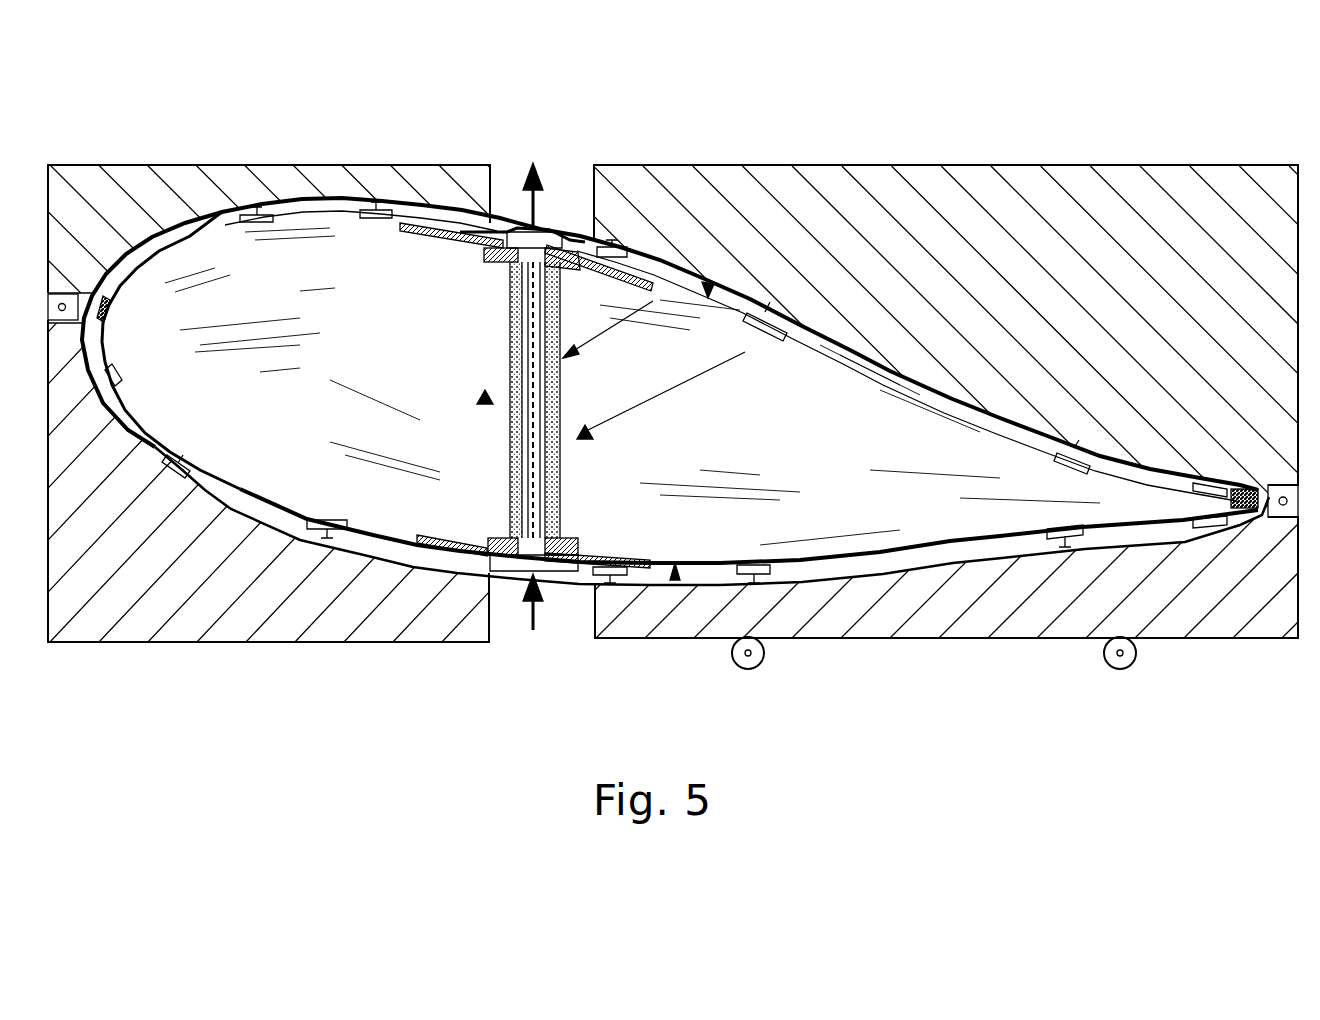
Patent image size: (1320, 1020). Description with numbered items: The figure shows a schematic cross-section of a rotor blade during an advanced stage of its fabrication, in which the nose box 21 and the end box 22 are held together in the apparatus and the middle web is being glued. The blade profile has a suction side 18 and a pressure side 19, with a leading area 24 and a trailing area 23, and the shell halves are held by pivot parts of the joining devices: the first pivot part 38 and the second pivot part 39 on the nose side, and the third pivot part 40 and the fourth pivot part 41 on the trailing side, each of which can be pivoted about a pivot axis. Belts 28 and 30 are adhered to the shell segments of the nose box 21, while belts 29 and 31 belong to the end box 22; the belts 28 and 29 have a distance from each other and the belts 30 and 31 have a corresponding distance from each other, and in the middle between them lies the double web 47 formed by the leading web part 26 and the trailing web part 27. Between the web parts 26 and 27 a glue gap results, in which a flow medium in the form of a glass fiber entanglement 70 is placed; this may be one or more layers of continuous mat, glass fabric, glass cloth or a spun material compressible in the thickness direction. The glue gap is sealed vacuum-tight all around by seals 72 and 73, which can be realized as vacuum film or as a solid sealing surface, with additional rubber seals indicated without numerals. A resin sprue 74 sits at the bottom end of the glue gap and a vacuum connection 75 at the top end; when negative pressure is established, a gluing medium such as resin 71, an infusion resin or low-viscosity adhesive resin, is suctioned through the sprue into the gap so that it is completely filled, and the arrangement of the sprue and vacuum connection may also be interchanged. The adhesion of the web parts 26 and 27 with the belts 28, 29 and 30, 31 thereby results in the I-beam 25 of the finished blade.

The suction side 18 is at (675, 578).
The pressure side 19 is at (710, 286).
The nose box 21 is at (282, 458).
The end box 22 is at (920, 515).
The trailing area 23 is at (481, 395).
The leading area 24 is at (802, 320).
The I-beam 25 is at (653, 301).
The web part 26 is at (398, 262).
The web part 27 is at (592, 244).
The belt 28 is at (440, 226).
The belt 29 is at (655, 280).
The belt 30 is at (443, 556).
The belt 31 is at (648, 566).
The first pivot part 38 is at (283, 192).
The second pivot part 39 is at (290, 612).
The third pivot part 40 is at (1037, 604).
The fourth pivot part 41 is at (1050, 200).
The double web 47 is at (505, 448).
The glass fiber entanglement 70 is at (745, 352).
The resin 71 is at (912, 285).
The seal 72 is at (500, 567).
The seal 73 is at (500, 236).
The resin sprue 74 is at (540, 613).
The vacuum connection 75 is at (584, 232).